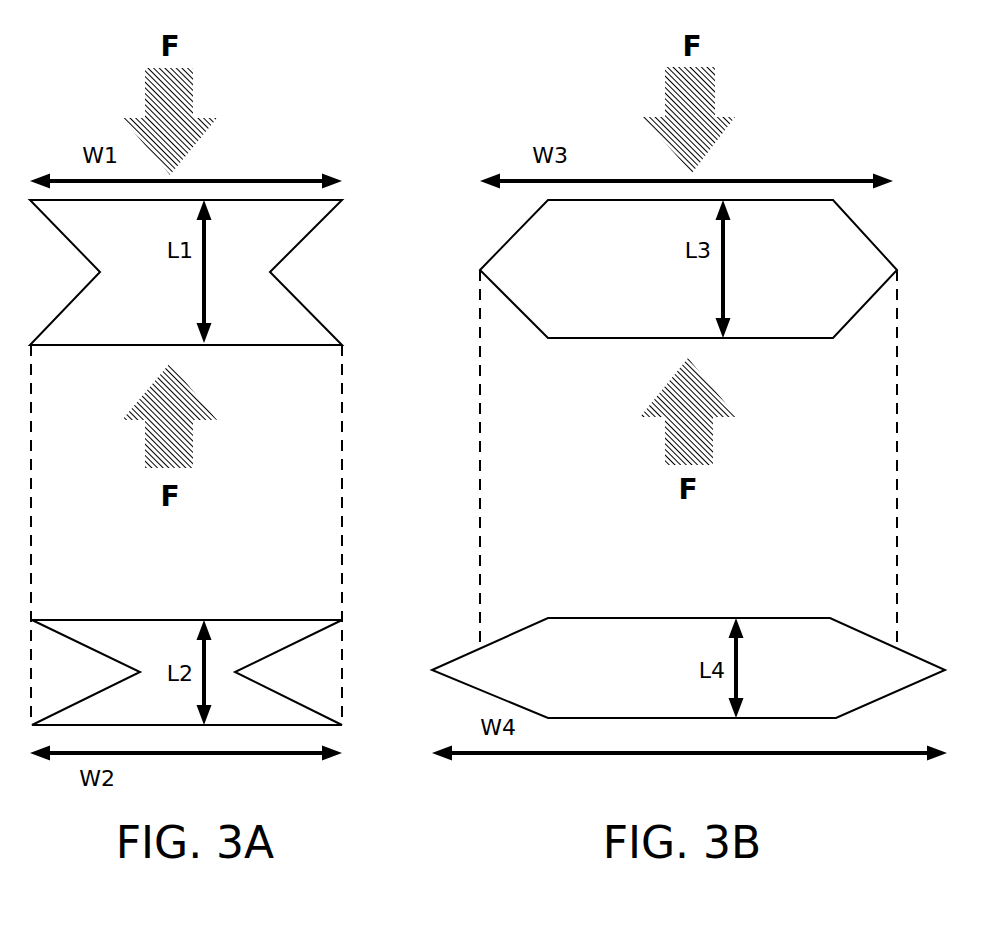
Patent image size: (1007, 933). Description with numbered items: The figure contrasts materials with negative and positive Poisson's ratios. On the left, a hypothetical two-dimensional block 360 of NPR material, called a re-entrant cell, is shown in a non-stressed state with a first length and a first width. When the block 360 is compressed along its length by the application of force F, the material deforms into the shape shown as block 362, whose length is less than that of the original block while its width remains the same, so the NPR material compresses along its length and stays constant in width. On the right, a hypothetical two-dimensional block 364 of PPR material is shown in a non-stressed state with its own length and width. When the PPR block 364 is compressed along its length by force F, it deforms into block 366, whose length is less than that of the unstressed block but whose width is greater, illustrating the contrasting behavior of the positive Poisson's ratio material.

In FIG. 3A, the block of NPR material 360 is at (243, 342).
In FIG. 3A, the compressed NPR block 362 is at (100, 620).
In FIG. 3B, the block of PPR material 364 is at (773, 338).
In FIG. 3B, the compressed PPR block 366 is at (615, 618).